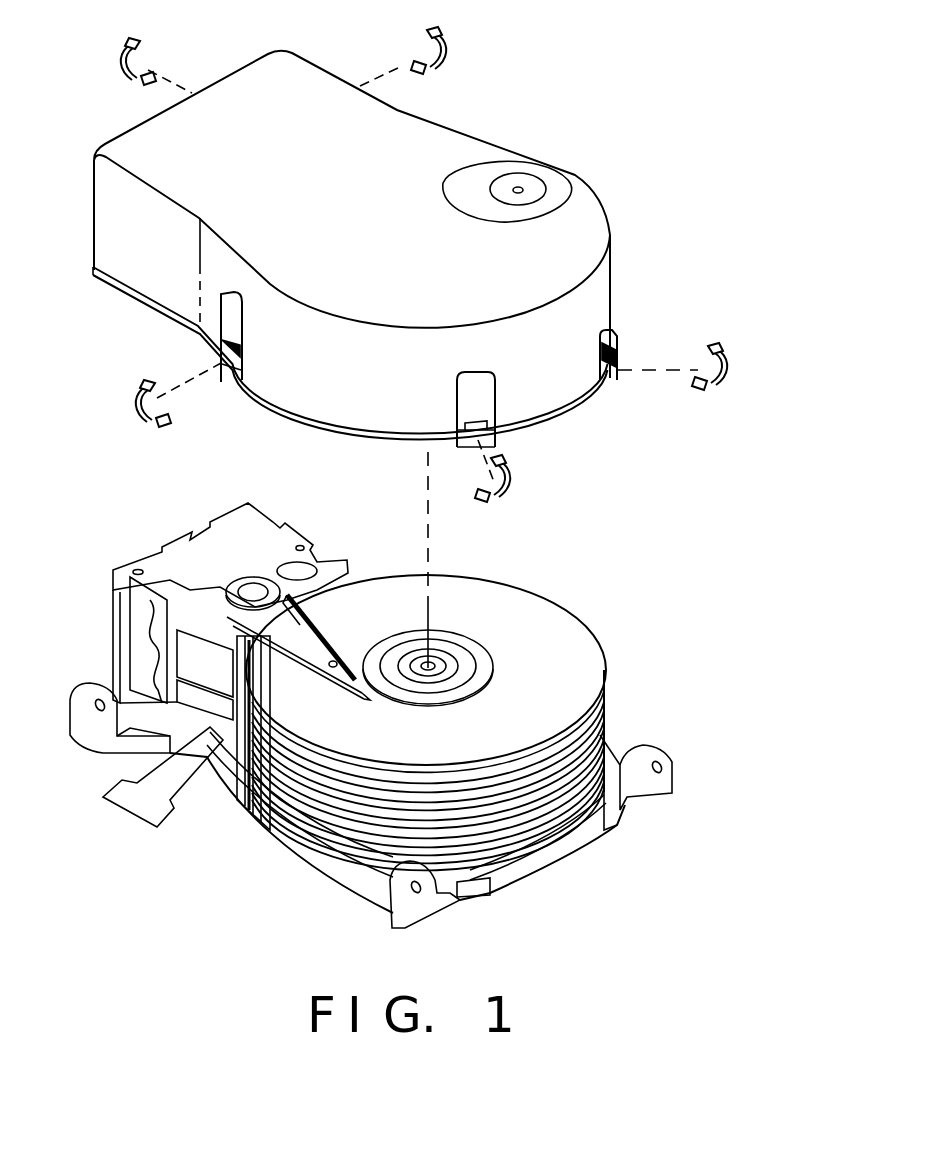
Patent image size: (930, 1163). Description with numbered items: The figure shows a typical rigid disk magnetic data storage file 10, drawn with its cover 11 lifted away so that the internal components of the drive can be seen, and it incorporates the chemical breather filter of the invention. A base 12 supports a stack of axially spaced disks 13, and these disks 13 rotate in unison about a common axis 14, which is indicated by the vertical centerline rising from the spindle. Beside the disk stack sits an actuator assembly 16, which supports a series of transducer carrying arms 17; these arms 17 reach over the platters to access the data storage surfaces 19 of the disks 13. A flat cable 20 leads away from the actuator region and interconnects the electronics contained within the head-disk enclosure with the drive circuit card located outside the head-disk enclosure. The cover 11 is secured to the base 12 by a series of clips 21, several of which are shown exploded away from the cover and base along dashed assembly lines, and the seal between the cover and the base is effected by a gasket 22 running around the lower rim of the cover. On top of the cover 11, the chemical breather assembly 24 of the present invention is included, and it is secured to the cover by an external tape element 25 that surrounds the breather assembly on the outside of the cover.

The rigid disk magnetic data storage file 10 is at (613, 723).
The cover 11 is at (597, 190).
The base 12 is at (428, 906).
The disks 13 is at (603, 685).
The common axis 14 is at (428, 524).
The actuator assembly 16 is at (214, 517).
The transducer carrying arms 17 is at (333, 618).
The data storage surfaces 19 is at (512, 613).
The flat cable 20 is at (183, 782).
The clips 21 is at (447, 44).
The gasket 22 is at (568, 413).
The chemical breather assembly 24 is at (540, 177).
The external tape element 25 is at (492, 166).